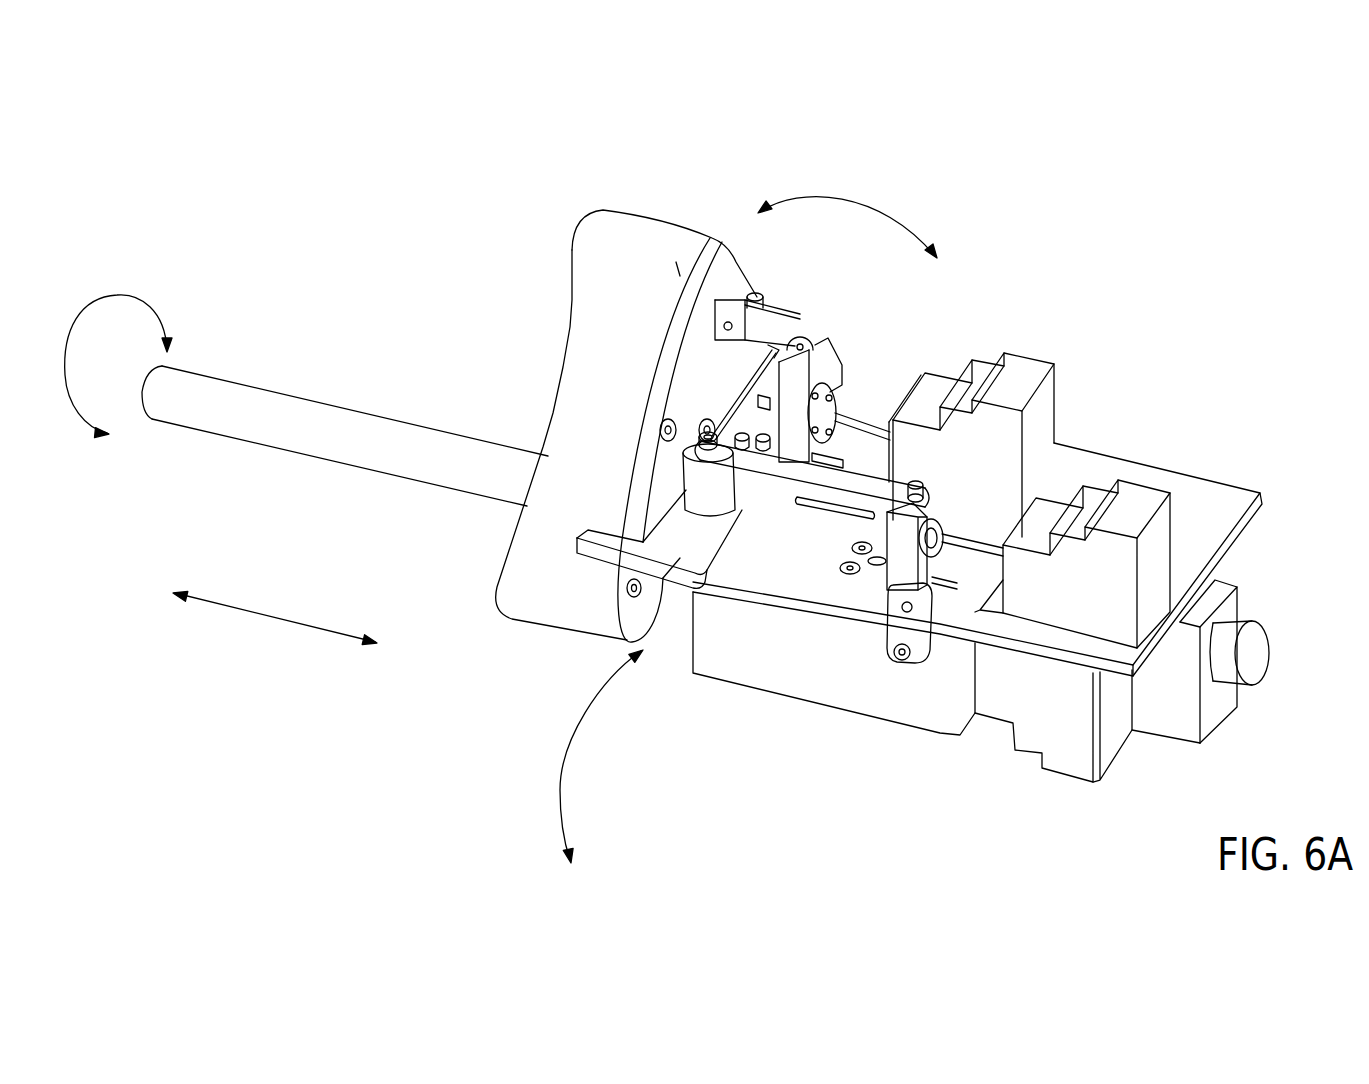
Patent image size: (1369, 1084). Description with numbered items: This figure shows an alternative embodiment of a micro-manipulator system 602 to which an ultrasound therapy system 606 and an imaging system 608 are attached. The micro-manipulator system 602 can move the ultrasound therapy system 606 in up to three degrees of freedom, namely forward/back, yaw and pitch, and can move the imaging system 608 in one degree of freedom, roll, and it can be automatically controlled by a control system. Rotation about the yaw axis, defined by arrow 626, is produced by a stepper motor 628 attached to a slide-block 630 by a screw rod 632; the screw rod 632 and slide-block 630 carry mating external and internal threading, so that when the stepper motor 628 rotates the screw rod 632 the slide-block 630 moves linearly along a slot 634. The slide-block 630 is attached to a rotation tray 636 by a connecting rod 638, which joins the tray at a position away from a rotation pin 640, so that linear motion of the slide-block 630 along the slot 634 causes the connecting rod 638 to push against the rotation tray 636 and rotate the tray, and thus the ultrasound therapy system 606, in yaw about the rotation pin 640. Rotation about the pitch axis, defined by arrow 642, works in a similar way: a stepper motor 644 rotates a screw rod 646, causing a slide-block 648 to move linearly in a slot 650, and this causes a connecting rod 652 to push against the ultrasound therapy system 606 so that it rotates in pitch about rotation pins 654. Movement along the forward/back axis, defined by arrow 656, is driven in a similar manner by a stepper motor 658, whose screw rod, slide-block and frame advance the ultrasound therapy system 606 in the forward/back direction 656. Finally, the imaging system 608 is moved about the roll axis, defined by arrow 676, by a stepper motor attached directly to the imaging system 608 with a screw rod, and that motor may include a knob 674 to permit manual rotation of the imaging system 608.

The micro-manipulator system 602 is at (1133, 324).
The ultrasound therapy system 606 is at (661, 200).
The imaging system 608 is at (272, 392).
The yaw axis arrow 626 is at (573, 738).
The stepper motor 628 is at (1143, 502).
The slide-block 630 is at (892, 568).
The screw rod 632 is at (853, 520).
The slot 634 is at (925, 588).
The rotation tray 636 is at (670, 553).
The connecting rod 638 is at (693, 597).
The rotation pin 640 is at (747, 424).
The pitch axis arrow 642 is at (870, 207).
The stepper motor 644 is at (1040, 430).
The screw rod 646 is at (868, 427).
The slide-block 648 is at (838, 352).
The slot 650 is at (718, 578).
The connecting rod 652 is at (765, 316).
The rotation pins 654 is at (587, 530).
The forward/back axis arrow 656 is at (270, 620).
The stepper motor 658 is at (1067, 763).
The knob 674 is at (1244, 619).
The roll axis arrow 676 is at (114, 293).